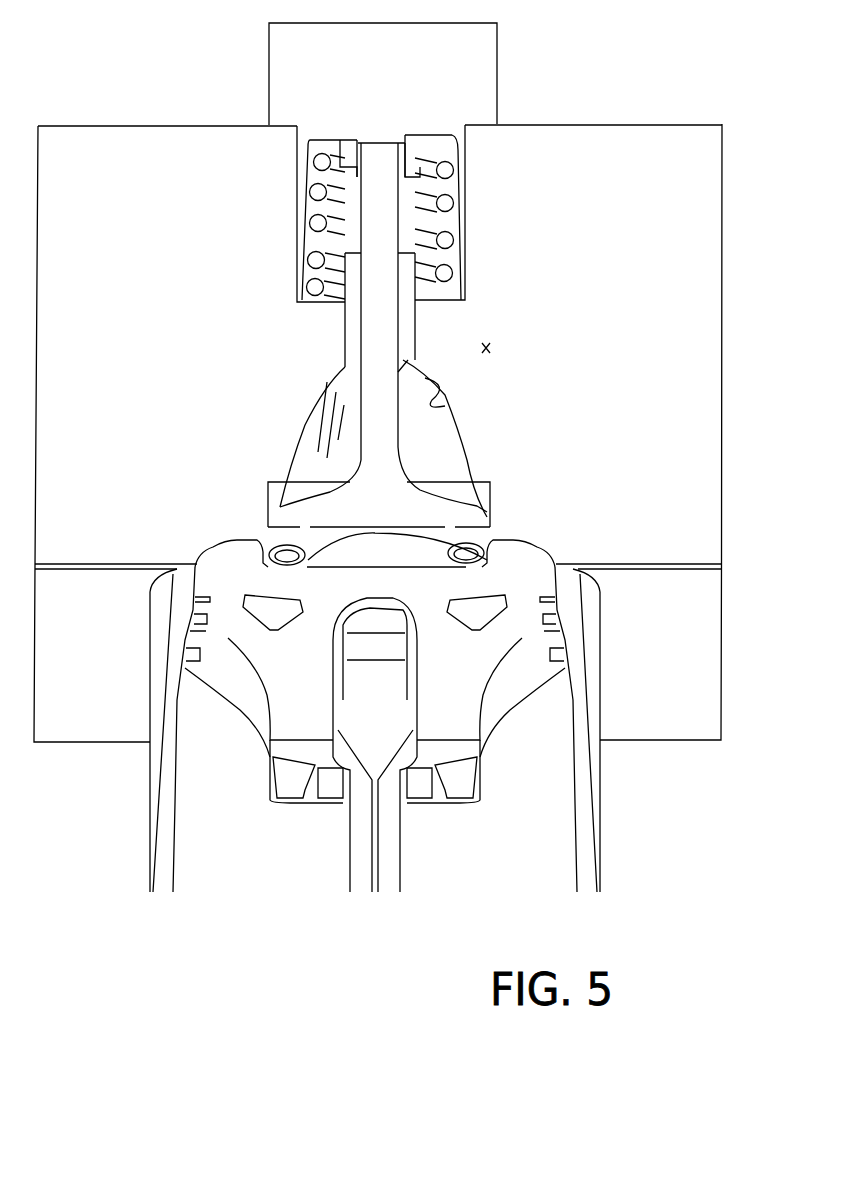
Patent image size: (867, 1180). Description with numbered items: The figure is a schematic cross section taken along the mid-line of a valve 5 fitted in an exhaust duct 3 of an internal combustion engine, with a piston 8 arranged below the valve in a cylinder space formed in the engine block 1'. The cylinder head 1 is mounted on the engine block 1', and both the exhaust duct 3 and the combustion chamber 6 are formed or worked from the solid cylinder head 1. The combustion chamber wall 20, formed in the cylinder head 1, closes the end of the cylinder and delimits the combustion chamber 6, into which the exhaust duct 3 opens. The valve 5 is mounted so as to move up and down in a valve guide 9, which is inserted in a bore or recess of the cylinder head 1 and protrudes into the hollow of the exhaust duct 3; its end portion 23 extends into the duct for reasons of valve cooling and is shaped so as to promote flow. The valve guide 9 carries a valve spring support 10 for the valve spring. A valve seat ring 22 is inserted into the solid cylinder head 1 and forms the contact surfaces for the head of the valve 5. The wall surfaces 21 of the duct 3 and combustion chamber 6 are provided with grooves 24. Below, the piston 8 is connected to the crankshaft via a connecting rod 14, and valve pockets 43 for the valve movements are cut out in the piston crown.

The cylinder head 1 is at (400, 344).
The engine block 1' is at (403, 653).
The exhaust duct 3 is at (458, 448).
The valve 5 is at (382, 448).
The combustion chamber 6 is at (388, 557).
The piston 8 is at (553, 580).
The valve guide 9 is at (358, 327).
The valve spring support 10 is at (452, 300).
The connecting rod 14 is at (395, 818).
The combustion chamber wall 20 is at (505, 522).
The wall surface 21 is at (447, 402).
The valve seat ring 22 is at (270, 494).
The end portion 23 is at (408, 346).
The grooves 24 is at (320, 404).
The valve pockets 43 is at (272, 538).